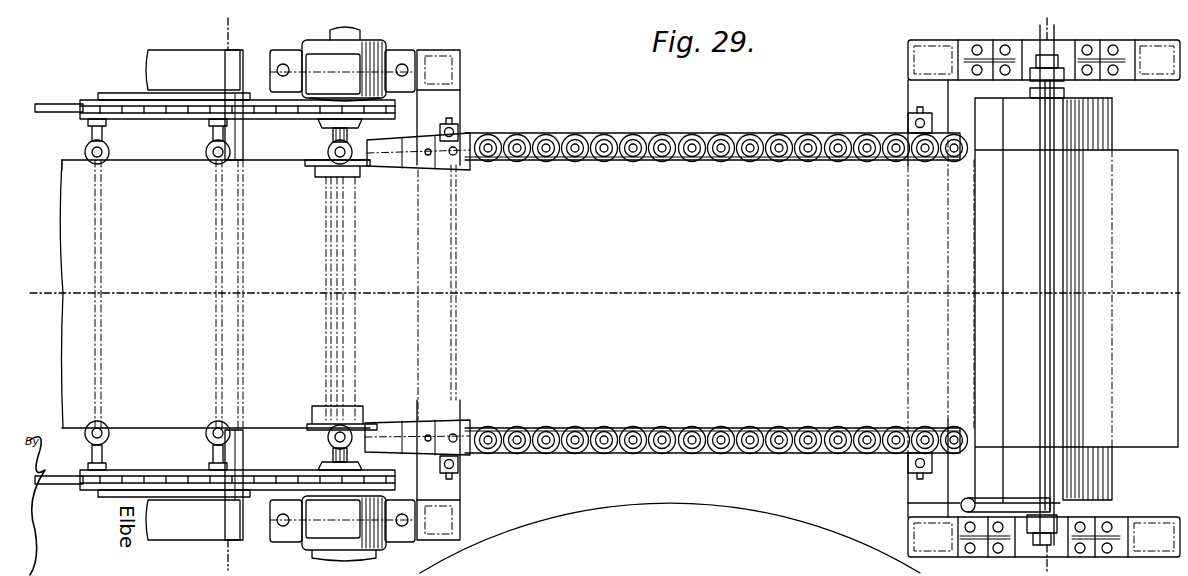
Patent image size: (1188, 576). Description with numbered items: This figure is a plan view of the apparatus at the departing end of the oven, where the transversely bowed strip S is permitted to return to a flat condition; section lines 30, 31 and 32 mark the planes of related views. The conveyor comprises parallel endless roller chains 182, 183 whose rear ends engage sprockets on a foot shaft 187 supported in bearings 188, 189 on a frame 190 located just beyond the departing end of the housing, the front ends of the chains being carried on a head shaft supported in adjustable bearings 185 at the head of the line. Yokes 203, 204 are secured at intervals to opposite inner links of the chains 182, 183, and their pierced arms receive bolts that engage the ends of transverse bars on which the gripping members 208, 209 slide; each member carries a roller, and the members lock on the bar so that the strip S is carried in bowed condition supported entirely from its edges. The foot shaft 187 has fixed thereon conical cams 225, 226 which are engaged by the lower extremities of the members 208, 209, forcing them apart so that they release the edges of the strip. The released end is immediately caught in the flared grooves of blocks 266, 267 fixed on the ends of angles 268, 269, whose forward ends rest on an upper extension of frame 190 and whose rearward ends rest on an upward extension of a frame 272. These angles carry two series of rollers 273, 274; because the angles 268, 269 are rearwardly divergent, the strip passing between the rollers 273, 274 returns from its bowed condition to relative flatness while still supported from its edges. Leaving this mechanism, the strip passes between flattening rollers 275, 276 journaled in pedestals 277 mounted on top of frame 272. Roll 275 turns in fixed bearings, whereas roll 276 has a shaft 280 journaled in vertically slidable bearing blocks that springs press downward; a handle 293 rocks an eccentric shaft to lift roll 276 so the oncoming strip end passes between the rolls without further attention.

The section line 30 is at (222, 33).
The section line 31 is at (40, 293).
The section line 32 is at (1050, 28).
The endless roller chain 182 is at (180, 105).
The adjustable bearing 185 is at (165, 465).
The foot shaft 187 is at (358, 392).
The bearing 188 is at (362, 62).
The bearing 189 is at (375, 545).
The frame 190 is at (461, 74).
The conical cam 225 is at (322, 166).
The conical cam 226 is at (318, 426).
The block 266 is at (466, 168).
The block 267 is at (466, 426).
The angle 268 is at (628, 130).
The angle 269 is at (616, 455).
The rollers 273 is at (644, 158).
The rollers 274 is at (660, 418).
The flattening roller 275 is at (1102, 131).
The flattening roller 276 is at (1072, 114).
The pedestal 277 is at (966, 72).
The frame 272 is at (1147, 517).
The shaft 280 is at (1042, 424).
The handle 293 is at (911, 494).
The member 209 is at (670, 539).
The member 208 is at (456, 567).
The yoke 203 is at (351, 566).
The endless roller chain 183 is at (271, 567).
The yoke 204 is at (984, 566).
The sheet S is at (278, 168).